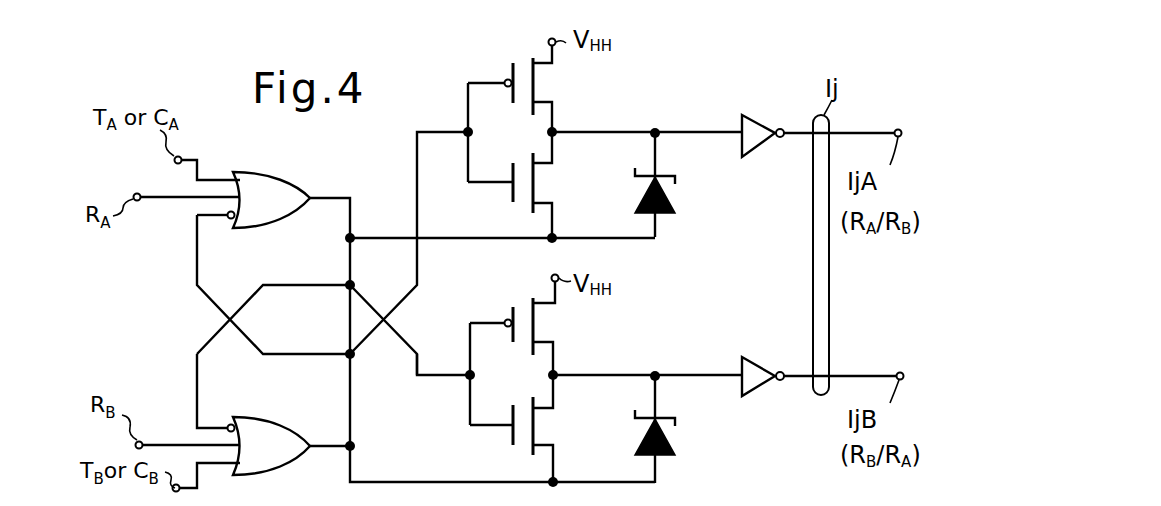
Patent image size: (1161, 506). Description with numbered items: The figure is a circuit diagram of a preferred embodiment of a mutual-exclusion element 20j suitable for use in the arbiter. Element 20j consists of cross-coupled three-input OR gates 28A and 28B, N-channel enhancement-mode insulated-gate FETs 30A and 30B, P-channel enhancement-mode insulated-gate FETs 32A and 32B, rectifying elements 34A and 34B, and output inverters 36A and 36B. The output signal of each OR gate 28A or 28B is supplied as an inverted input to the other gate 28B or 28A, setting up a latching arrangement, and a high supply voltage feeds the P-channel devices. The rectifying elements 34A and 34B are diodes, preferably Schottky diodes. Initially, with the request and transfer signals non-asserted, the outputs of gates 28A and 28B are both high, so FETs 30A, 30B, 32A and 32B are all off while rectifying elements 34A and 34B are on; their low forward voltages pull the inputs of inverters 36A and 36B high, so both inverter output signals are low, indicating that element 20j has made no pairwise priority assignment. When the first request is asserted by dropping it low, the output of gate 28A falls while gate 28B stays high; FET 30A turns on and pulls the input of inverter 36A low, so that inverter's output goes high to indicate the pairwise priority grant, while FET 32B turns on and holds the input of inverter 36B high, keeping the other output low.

The ME element 20j is at (497, 296).
The three-input OR gate 28A is at (283, 172).
The three-input OR gate 28B is at (277, 417).
The N-channel enhancement-mode insulated-gate FET 30A is at (540, 189).
The N-channel enhancement-mode insulated-gate FET 30B is at (540, 431).
The P-channel enhancement-mode insulated-gate FET 32A is at (540, 87).
The P-channel enhancement-mode insulated-gate FET 32B is at (540, 325).
The rectifying element 34A is at (673, 198).
The rectifying element 34B is at (673, 446).
The output inverter 36A is at (745, 115).
The output inverter 36B is at (745, 357).